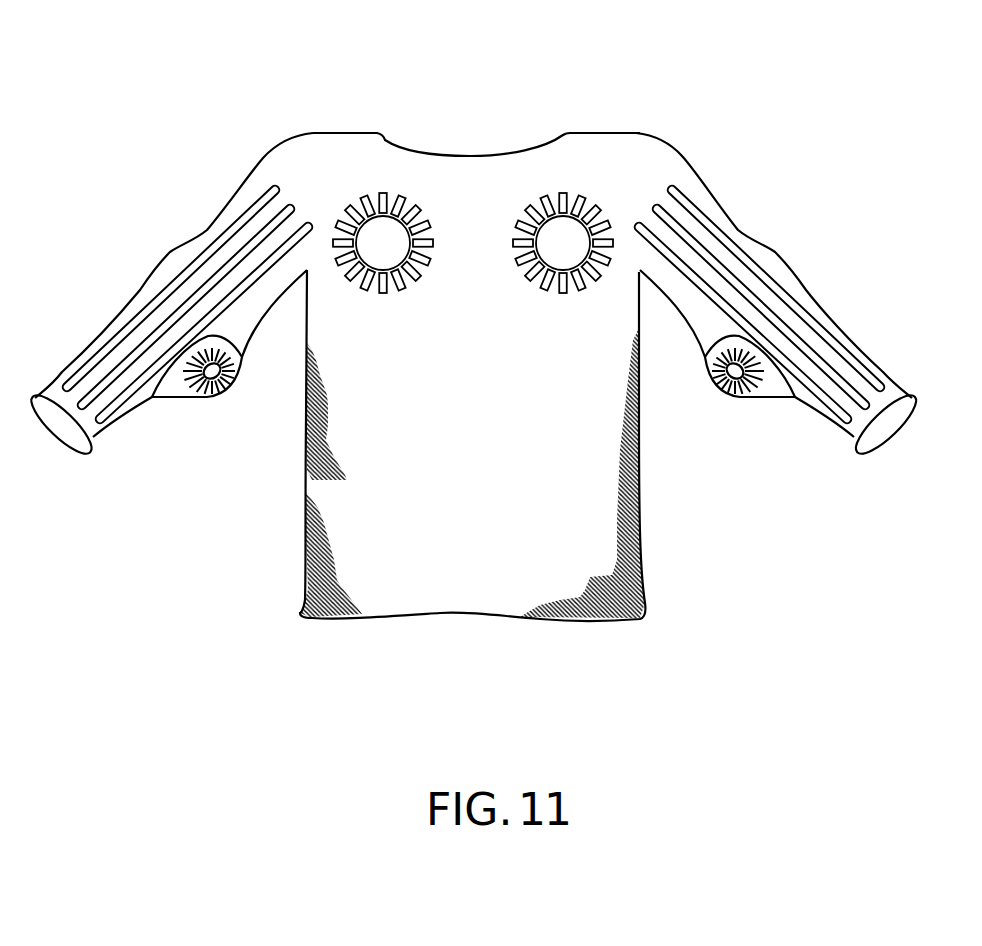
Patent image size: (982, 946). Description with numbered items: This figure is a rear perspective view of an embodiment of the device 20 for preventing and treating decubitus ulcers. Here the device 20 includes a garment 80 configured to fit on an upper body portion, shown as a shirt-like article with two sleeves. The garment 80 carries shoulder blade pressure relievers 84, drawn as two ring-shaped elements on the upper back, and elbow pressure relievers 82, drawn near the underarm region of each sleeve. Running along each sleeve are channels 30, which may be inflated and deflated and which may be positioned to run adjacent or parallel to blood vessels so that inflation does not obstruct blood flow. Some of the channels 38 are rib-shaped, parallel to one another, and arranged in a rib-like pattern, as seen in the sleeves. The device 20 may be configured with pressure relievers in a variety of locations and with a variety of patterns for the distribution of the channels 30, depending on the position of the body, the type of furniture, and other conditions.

The device 20 is at (562, 645).
The channels 30 is at (200, 255).
The channels 38 is at (205, 378).
The garment 80 is at (335, 133).
The elbow pressure relievers 82 is at (210, 400).
The shoulder blade pressure relievers 84 is at (382, 243).